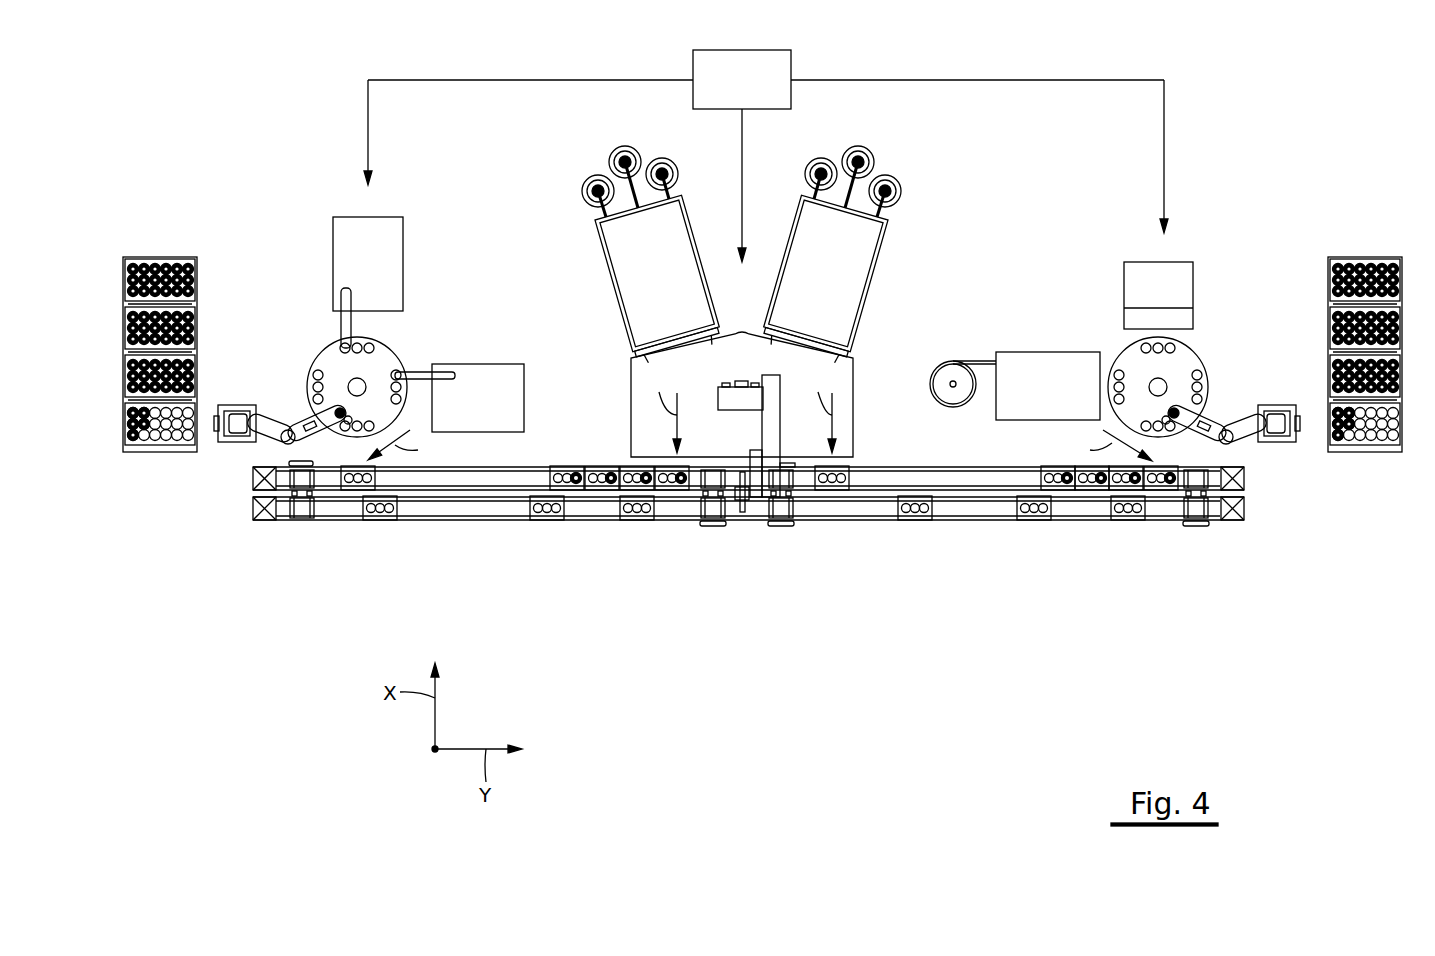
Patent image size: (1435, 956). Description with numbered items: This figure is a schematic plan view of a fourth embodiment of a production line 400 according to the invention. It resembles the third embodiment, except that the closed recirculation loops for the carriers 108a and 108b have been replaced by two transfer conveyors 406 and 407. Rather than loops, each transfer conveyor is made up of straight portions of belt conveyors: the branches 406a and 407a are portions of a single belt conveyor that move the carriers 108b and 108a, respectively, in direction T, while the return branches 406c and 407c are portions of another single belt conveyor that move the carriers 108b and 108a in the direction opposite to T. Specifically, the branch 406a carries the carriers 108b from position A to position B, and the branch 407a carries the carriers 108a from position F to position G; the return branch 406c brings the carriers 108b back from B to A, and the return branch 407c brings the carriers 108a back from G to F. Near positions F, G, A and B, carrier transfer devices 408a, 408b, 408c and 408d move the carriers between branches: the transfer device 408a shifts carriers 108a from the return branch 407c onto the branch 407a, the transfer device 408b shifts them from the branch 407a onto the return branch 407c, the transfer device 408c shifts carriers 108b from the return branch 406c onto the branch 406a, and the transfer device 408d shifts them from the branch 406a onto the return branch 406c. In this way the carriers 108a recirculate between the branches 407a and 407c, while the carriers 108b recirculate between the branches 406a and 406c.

The production line 400 is at (1234, 101).
The transfer conveyor 406 is at (899, 555).
The branch 406a is at (975, 482).
The return branch 406c is at (995, 512).
The transfer conveyor 407 is at (559, 542).
The branch 407a is at (522, 474).
The return branch 407c is at (467, 505).
The carrier transfer device 408a is at (300, 520).
The carrier transfer device 408b is at (712, 526).
The carrier transfer device 408c is at (785, 526).
The carrier transfer device 408d is at (1197, 526).
The carrier 108a is at (350, 492).
The carrier 108b is at (848, 476).